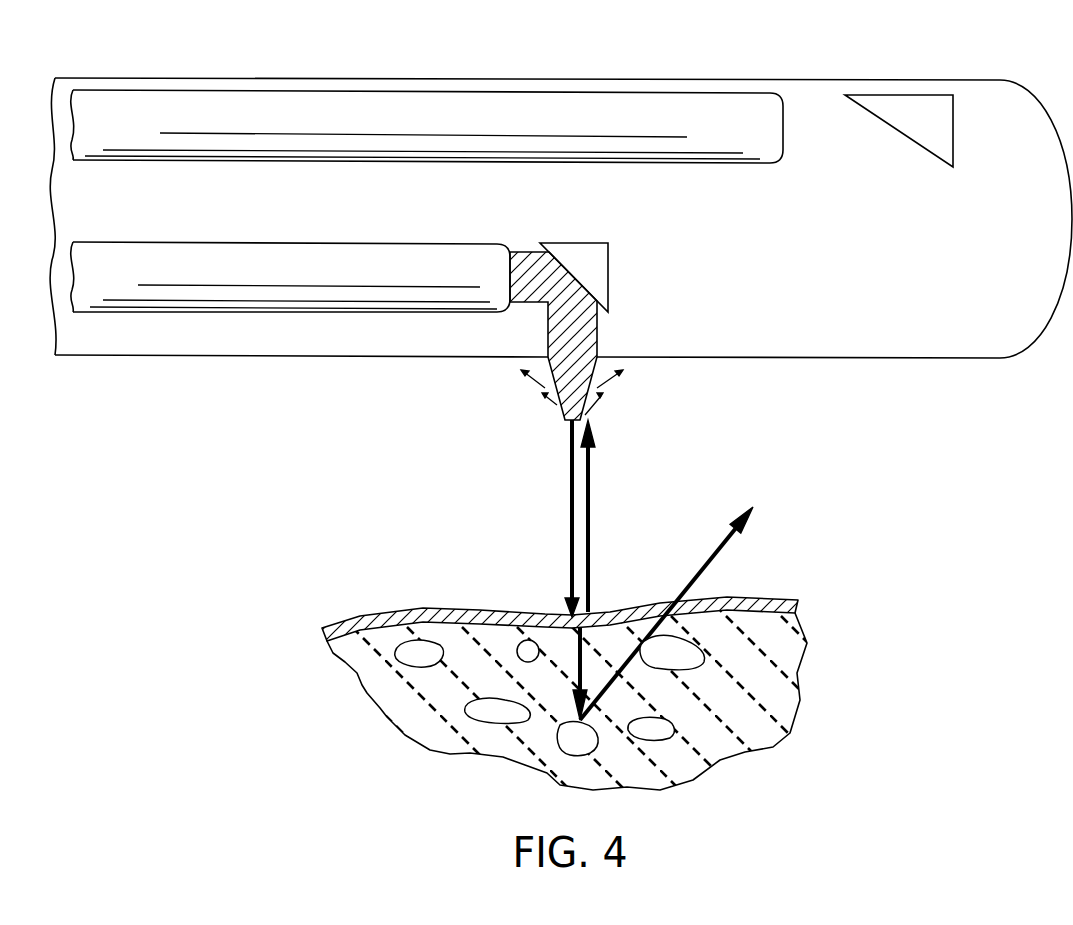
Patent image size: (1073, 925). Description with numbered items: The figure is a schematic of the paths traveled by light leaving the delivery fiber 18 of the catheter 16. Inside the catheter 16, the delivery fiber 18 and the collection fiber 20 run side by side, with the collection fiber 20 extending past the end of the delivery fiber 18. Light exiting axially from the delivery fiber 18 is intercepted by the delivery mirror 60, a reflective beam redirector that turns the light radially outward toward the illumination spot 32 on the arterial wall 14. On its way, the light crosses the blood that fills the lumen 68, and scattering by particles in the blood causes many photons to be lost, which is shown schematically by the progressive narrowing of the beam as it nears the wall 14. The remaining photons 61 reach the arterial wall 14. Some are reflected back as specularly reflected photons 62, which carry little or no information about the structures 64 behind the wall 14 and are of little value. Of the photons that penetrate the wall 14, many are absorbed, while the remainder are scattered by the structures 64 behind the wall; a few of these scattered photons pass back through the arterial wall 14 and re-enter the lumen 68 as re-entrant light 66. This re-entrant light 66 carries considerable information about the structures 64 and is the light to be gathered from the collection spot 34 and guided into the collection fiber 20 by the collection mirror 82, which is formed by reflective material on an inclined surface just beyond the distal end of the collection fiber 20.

The arterial wall 14 is at (549, 677).
The catheter 16 is at (703, 58).
The delivery fiber 18 is at (325, 242).
The collection fiber 20 is at (697, 165).
The illumination spot 32 is at (547, 613).
The collection spot 34 is at (655, 607).
The delivery mirror 60 is at (608, 270).
The remaining photons 61 is at (569, 518).
The specularly reflected photons 62 is at (590, 472).
The structures behind the arterial wall 64 is at (493, 725).
The re-entrant light 66 is at (703, 563).
The lumen 68 is at (390, 538).
The collection mirror 82 is at (953, 125).